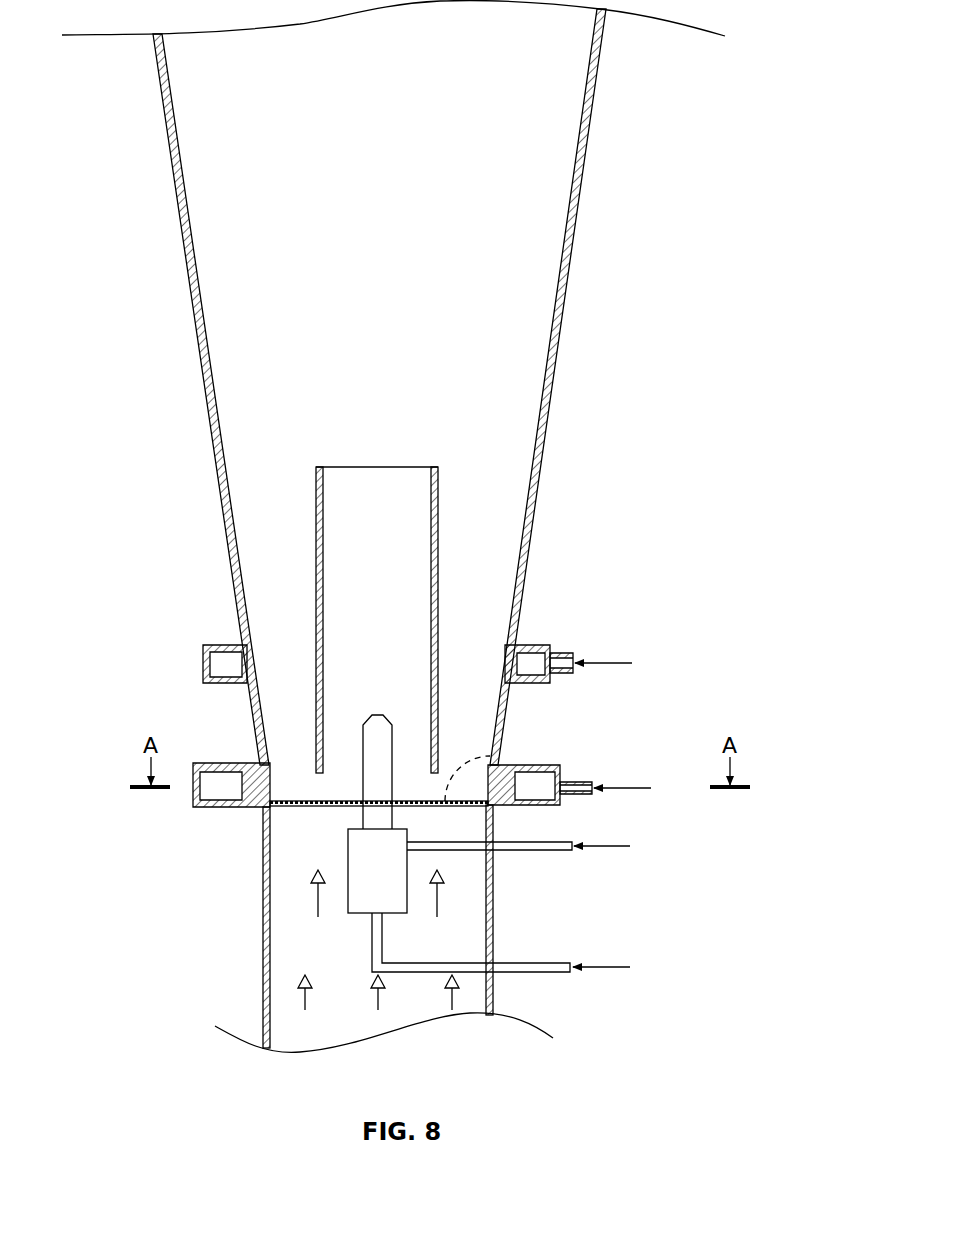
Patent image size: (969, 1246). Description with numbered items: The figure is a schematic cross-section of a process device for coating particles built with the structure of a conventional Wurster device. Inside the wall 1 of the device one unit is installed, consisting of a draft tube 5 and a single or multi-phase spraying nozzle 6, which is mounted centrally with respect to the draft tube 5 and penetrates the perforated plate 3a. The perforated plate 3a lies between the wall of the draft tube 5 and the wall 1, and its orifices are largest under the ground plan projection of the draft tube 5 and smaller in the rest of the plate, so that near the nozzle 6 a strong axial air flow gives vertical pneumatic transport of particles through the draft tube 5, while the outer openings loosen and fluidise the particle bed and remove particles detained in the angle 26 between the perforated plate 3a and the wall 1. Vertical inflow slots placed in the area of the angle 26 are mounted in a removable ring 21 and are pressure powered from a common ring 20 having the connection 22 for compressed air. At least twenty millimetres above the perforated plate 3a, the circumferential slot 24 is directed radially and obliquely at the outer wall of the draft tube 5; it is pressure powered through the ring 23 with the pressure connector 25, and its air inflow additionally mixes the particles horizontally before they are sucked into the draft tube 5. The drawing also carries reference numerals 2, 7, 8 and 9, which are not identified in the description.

The wall 1 is at (560, 310).
The lower vertical wall 2 is at (490, 901).
The perforated plate 3a is at (326, 812).
The draft tube 5 is at (436, 521).
The spraying nozzle 6 is at (371, 904).
The supply pipe 7 is at (514, 948).
The supply pipe 8 is at (532, 848).
The gas flow 9 is at (378, 950).
The common ring 20 is at (563, 807).
The removable ring 21 is at (243, 790).
The connection for compressed air 22 is at (624, 789).
The ring 23 is at (548, 647).
The circumferential slot 24 is at (229, 646).
The pressure connector 25 is at (613, 664).
The angle 26 is at (467, 778).